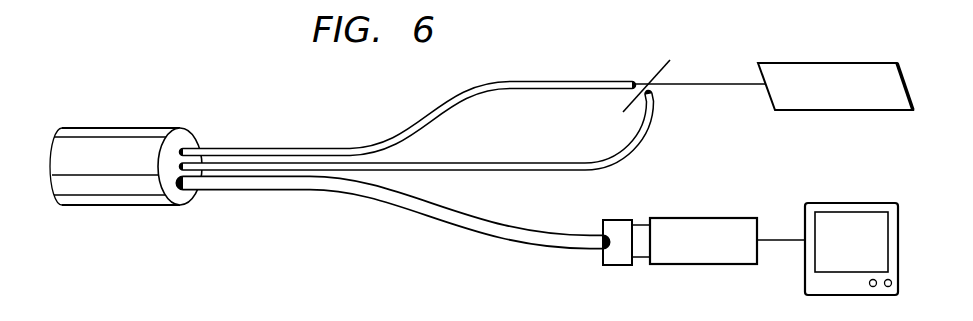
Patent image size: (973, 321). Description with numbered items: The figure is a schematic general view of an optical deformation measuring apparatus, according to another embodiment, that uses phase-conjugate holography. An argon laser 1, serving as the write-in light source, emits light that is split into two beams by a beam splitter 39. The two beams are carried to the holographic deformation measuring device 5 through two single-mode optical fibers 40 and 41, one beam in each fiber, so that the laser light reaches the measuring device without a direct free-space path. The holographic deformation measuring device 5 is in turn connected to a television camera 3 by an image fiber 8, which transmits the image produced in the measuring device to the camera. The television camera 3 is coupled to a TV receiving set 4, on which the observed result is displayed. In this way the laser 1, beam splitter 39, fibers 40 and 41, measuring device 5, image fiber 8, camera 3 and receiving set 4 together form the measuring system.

The argon (Ar) laser 1 is at (895, 87).
The television (TV) camera 3 is at (703, 230).
The TV receiving set 4 is at (847, 220).
The holographic deformation measuring device 5 is at (127, 137).
The image fiber 8 is at (433, 208).
The beam splitter 39 is at (648, 82).
The single-mode optical fiber 40 is at (418, 104).
The single-mode optical fiber 41 is at (483, 163).